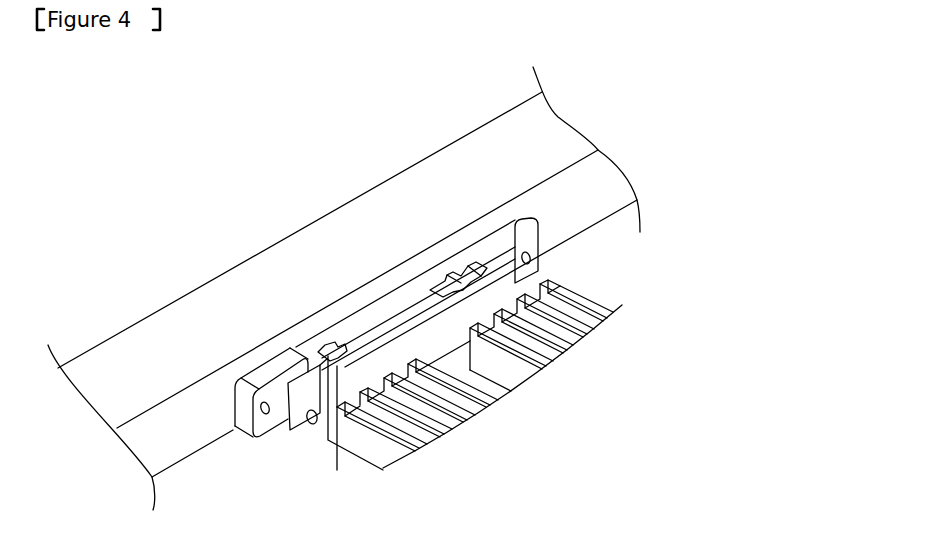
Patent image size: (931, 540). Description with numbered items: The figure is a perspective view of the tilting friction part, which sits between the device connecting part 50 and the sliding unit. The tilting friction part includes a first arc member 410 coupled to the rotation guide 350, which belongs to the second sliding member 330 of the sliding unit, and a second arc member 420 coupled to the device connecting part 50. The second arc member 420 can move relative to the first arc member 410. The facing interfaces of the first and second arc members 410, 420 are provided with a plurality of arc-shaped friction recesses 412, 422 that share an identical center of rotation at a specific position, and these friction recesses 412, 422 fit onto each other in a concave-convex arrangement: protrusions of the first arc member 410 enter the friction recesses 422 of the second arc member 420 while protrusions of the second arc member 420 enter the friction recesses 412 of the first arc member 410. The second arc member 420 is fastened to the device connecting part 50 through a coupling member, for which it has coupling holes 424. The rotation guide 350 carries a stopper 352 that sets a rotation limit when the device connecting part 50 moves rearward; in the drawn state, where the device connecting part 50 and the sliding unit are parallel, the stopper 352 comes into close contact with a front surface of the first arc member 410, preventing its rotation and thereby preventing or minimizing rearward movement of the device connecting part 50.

The device connecting part 50 is at (163, 330).
The first arc member 410 is at (303, 378).
The friction recesses 412 is at (330, 357).
The second arc member 420 is at (482, 250).
The friction recesses 422 is at (330, 352).
The stopper 352 is at (363, 372).
The rotation guide 350 is at (518, 256).
The coupling holes 424 is at (270, 414).
The second sliding member 330 is at (386, 466).